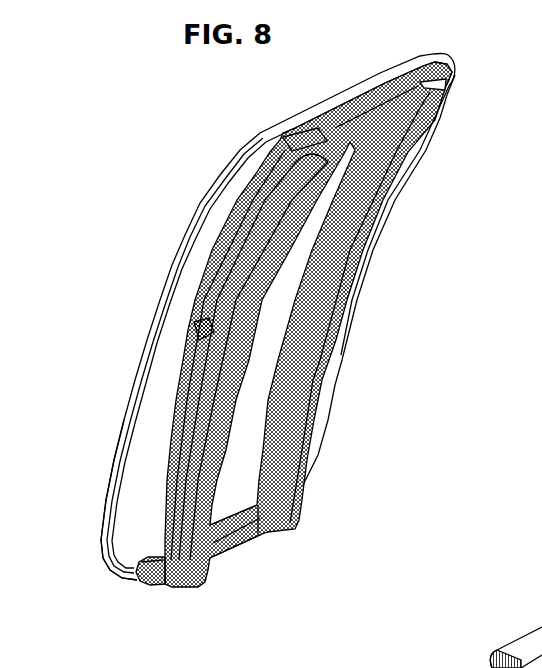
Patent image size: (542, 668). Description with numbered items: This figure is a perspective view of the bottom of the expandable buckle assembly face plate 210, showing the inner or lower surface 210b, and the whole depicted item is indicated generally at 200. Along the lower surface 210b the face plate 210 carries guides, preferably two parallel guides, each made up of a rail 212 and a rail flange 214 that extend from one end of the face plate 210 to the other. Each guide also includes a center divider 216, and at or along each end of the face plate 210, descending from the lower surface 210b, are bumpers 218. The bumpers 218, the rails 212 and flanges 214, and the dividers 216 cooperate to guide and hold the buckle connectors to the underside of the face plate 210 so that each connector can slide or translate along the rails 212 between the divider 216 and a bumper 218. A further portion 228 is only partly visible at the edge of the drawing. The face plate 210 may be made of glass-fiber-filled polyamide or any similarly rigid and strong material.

The assembly 200 is at (271, 346).
The face plate 210 is at (233, 153).
The lower surface 210b is at (130, 490).
The rail 212 is at (355, 233).
The rail flange 214 is at (165, 588).
The center divider 216 is at (194, 326).
The bumper 218 is at (456, 70).
The adjacent component 228 is at (541, 623).